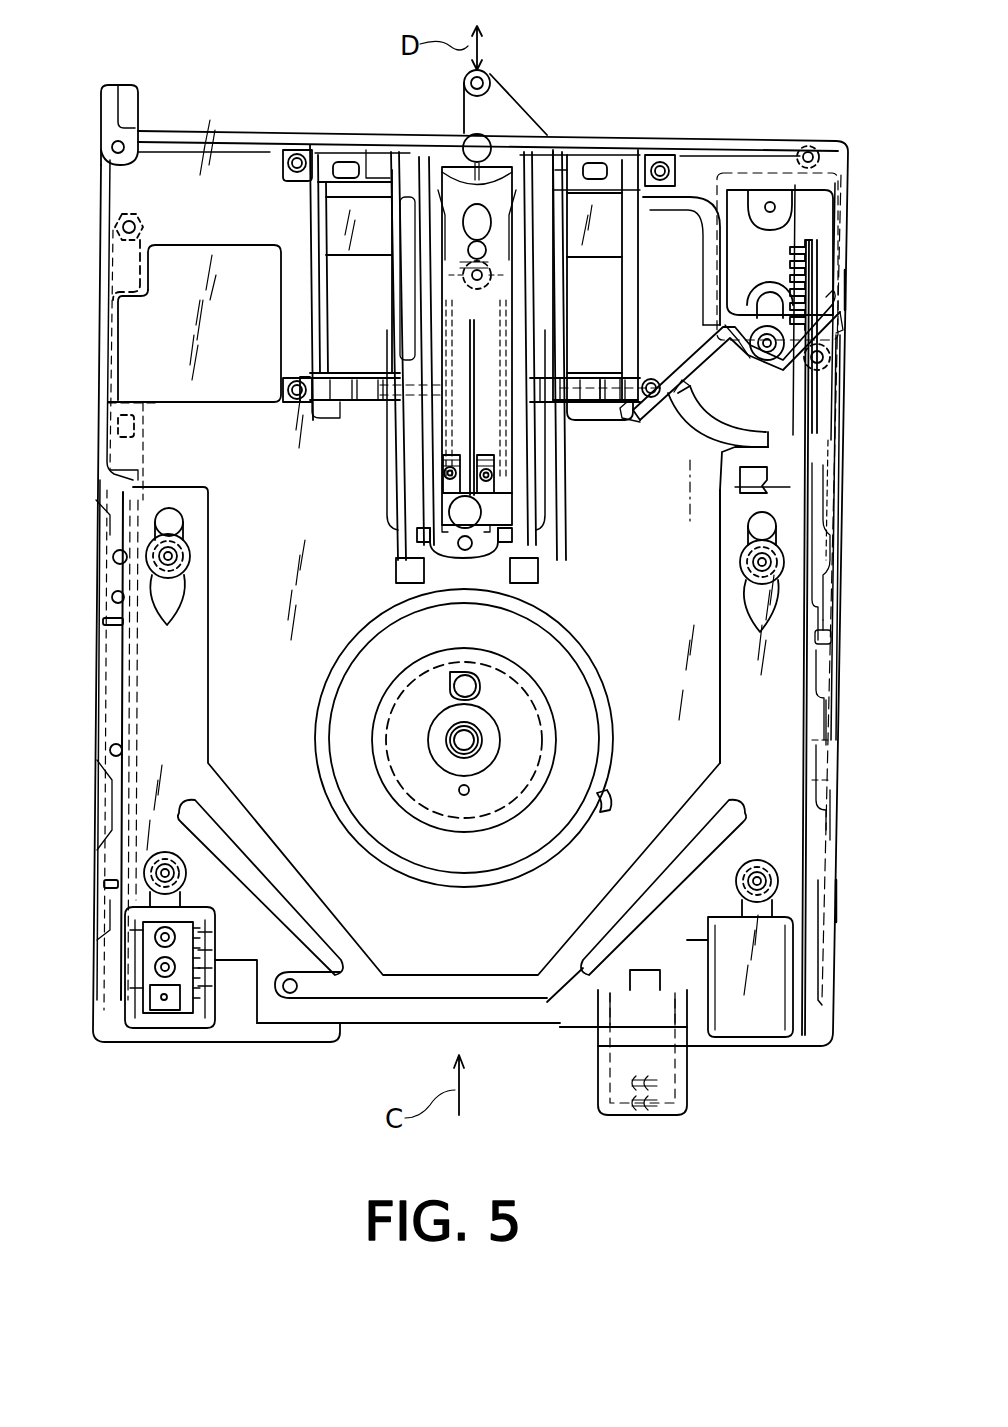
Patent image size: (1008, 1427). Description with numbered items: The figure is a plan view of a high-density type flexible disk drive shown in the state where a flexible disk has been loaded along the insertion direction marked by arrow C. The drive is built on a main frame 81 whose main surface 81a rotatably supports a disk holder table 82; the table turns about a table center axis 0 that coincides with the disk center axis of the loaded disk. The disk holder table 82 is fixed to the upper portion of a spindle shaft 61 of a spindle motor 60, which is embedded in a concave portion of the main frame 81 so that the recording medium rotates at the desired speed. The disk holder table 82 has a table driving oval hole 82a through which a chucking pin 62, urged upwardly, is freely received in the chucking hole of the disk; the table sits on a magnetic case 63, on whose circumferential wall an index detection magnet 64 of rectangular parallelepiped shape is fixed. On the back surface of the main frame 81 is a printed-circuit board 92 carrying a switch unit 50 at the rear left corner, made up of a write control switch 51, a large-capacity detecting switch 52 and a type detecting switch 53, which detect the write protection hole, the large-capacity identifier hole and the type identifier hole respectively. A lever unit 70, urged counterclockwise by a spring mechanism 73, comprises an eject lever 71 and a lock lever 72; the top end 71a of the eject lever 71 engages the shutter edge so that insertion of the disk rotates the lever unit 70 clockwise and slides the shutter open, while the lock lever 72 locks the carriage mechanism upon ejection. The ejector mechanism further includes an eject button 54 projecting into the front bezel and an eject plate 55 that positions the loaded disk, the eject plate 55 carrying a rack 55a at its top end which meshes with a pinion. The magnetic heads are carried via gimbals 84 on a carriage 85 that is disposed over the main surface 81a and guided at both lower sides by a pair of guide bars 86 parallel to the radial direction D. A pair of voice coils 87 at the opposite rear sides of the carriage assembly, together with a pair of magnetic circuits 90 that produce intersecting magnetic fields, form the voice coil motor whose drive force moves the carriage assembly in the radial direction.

The table center axis 0 is at (462, 750).
The switch unit 50 is at (180, 1012).
The write control switch 51 is at (160, 1012).
The large-capacity detecting switch 52 is at (160, 968).
The type detecting switch 53 is at (160, 938).
The eject button 54 is at (690, 1090).
The eject plate 55 is at (790, 727).
The rack 55a is at (800, 258).
The spindle motor 60 is at (305, 735).
The spindle shaft 61 is at (476, 740).
The chucking pin 62 is at (478, 690).
The magnetic case 63 is at (603, 770).
The index detection magnet 64 is at (605, 812).
The lever unit 70 is at (678, 445).
The eject lever 71 is at (645, 405).
The top end 71a is at (590, 355).
The lock lever 72 is at (697, 192).
The spring mechanism 73 is at (755, 340).
The main frame 81 is at (250, 1042).
The main surface 81a is at (272, 696).
The disk holder table 82 is at (540, 702).
The table driving oval hole 82a is at (458, 672).
The gimbals 84 is at (482, 505).
The carriage 85 is at (494, 460).
The guide bars 86 is at (440, 495).
The voice coils 87 is at (322, 272).
The magnetic circuits 90 is at (340, 405).
The printed-circuit board 92 is at (218, 326).